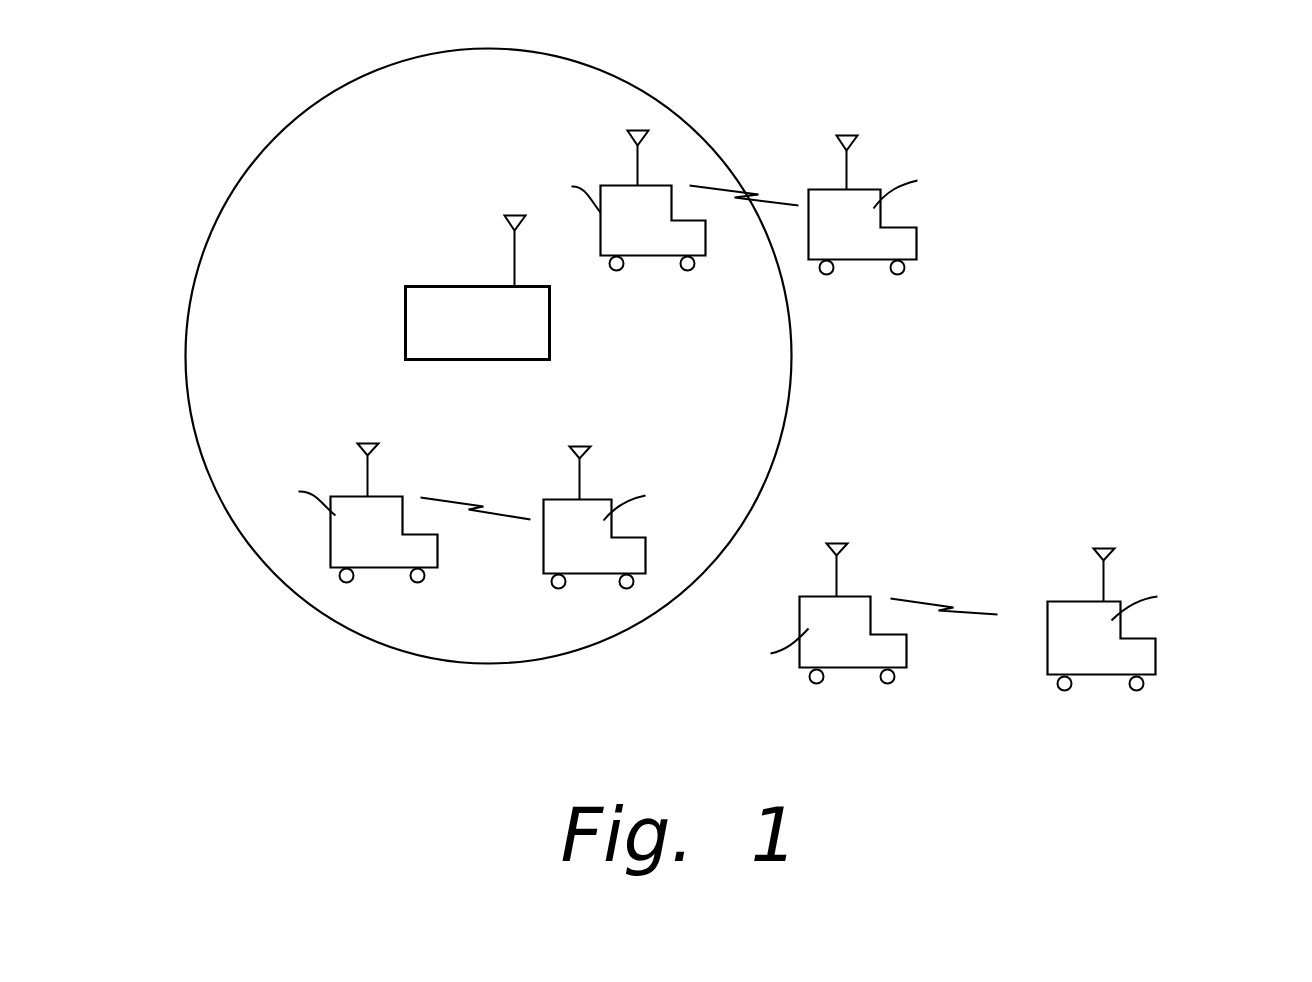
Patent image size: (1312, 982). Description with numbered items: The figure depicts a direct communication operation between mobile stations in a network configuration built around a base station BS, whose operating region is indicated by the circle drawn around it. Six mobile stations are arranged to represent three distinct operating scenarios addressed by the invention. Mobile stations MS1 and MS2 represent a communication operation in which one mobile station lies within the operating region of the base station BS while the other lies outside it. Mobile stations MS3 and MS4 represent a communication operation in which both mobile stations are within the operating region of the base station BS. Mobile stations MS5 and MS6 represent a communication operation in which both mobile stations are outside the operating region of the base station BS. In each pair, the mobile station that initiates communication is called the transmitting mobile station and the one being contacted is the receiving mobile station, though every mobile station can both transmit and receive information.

The base station BS is at (549, 323).
The mobile station MS1 is at (705, 240).
The mobile station MS2 is at (916, 242).
The mobile station MS3 is at (437, 548).
The mobile station MS4 is at (676, 540).
The mobile station MS5 is at (906, 651).
The mobile station MS6 is at (1155, 656).